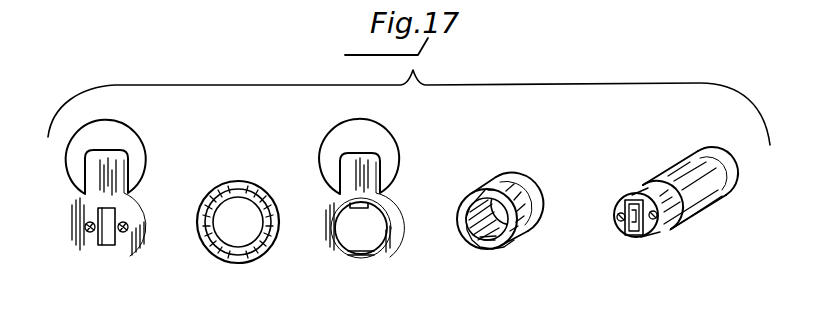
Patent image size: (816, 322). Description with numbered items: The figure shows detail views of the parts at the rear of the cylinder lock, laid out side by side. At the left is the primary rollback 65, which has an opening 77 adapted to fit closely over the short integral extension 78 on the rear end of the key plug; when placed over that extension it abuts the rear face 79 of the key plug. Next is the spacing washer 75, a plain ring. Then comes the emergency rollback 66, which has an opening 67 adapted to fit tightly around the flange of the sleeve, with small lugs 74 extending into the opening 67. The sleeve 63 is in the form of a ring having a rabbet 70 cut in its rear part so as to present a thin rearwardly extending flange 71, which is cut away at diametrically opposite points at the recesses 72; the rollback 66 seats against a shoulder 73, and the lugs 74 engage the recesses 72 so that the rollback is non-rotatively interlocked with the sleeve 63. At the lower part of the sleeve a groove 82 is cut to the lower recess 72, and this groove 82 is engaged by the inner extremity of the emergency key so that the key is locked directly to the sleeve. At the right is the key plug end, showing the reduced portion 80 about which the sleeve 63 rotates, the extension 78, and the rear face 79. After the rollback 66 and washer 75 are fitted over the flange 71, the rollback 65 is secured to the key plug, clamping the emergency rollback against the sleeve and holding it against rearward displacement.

The sleeve 63 is at (514, 220).
The primary rollback 65 is at (112, 180).
The emergency rollback 66 is at (358, 208).
The opening 67 is at (348, 235).
The rabbet 70 is at (540, 208).
The flange 71 is at (463, 228).
The cutaway portions 72 is at (493, 188).
The shoulder 73 is at (518, 187).
The lugs 74 is at (355, 203).
The spacing washer 75 is at (243, 182).
The opening 77 is at (107, 245).
The extension 78 is at (676, 215).
The rear face 79 is at (655, 233).
The reduced portion 80 is at (643, 190).
The groove 82 is at (502, 243).